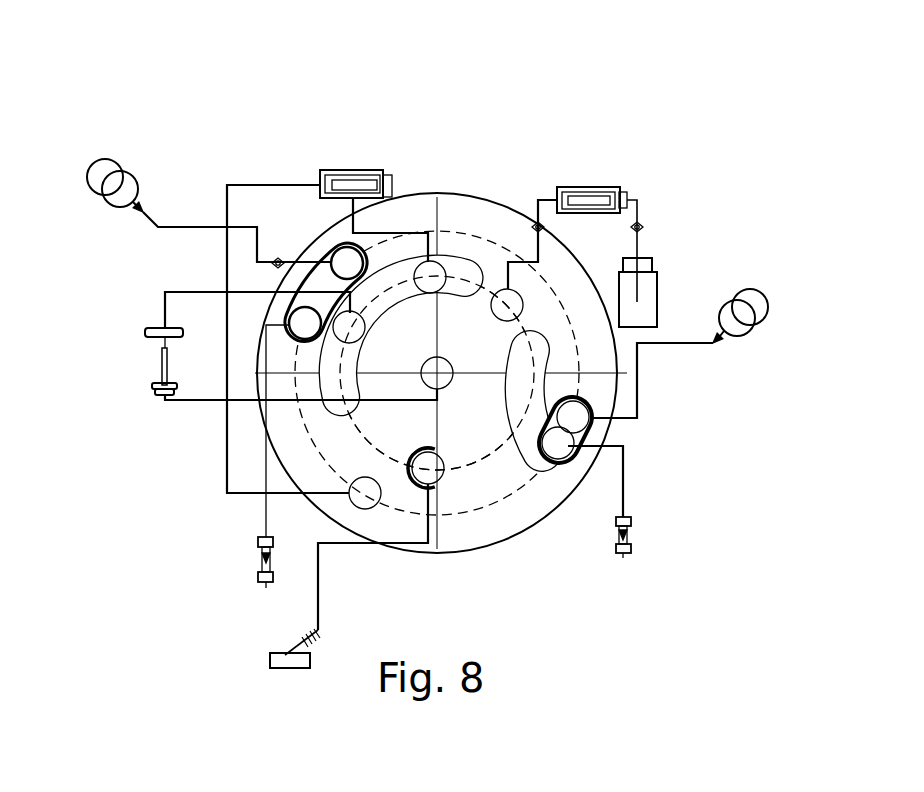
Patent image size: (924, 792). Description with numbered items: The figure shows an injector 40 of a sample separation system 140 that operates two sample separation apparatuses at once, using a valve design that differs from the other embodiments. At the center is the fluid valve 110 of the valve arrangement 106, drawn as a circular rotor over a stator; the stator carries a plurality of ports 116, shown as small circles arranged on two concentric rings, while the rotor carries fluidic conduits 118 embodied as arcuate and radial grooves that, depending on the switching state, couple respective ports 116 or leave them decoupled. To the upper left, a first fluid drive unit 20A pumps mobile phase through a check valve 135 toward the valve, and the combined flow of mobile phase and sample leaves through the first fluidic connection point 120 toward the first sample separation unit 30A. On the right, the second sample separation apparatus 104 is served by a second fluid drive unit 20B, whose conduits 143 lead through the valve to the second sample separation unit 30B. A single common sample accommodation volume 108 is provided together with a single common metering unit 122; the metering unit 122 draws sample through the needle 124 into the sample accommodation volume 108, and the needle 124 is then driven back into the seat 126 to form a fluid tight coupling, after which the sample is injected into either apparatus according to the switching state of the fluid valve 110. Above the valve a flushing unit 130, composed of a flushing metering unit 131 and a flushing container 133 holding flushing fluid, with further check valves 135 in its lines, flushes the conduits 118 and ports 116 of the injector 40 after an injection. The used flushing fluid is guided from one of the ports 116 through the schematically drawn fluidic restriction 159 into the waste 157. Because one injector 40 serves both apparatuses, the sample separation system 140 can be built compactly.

The sample separation system 140 is at (90, 118).
The first fluid drive unit 20A is at (120, 157).
The check valve 135 is at (278, 257).
The metering unit 122 is at (353, 170).
The ports 116 is at (425, 262).
The valve arrangement 106 is at (454, 207).
The injector 40 is at (498, 170).
The flushing metering unit 131 is at (585, 187).
The flushing unit 130 is at (628, 170).
The second sample separation apparatus 104 is at (694, 250).
The second fluid drive unit 20B is at (763, 294).
The fluid valve 110 is at (575, 254).
The flushing container 133 is at (657, 292).
The first fluidic connection point 120 is at (300, 318).
The fluidic conduits 118 is at (385, 352).
The sample accommodation volume 108 is at (145, 333).
The needle 124 is at (160, 355).
The seat 126 is at (152, 392).
The conduits 143 is at (690, 343).
The first sample separation unit 30A is at (258, 550).
The second sample separation unit 30B is at (628, 530).
The fluidic restriction 159 is at (312, 633).
The waste 157 is at (278, 660).